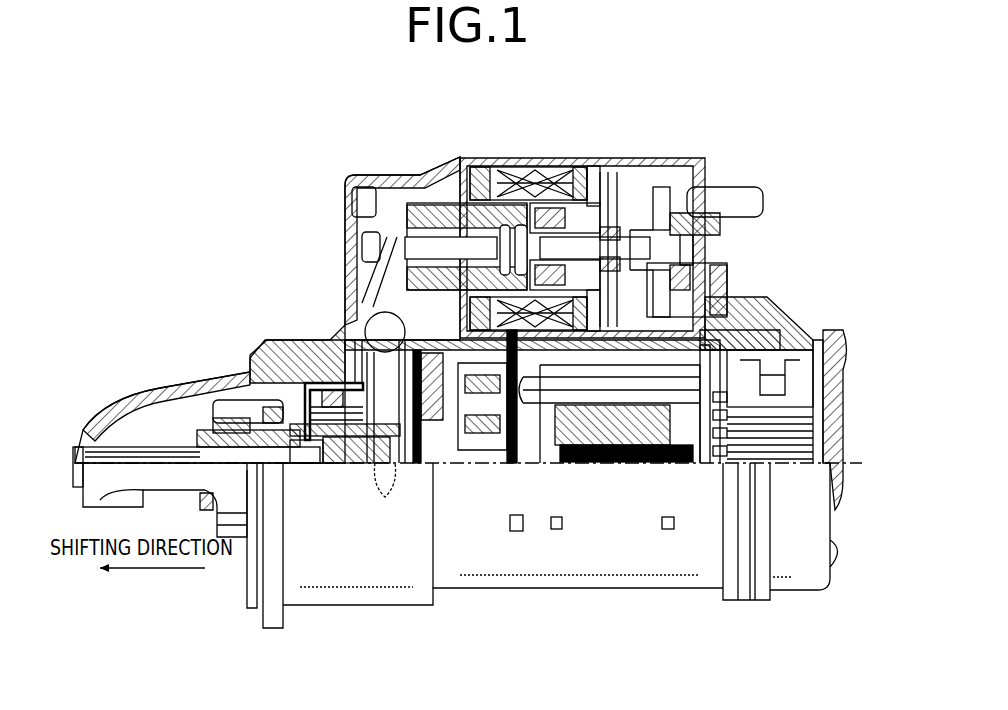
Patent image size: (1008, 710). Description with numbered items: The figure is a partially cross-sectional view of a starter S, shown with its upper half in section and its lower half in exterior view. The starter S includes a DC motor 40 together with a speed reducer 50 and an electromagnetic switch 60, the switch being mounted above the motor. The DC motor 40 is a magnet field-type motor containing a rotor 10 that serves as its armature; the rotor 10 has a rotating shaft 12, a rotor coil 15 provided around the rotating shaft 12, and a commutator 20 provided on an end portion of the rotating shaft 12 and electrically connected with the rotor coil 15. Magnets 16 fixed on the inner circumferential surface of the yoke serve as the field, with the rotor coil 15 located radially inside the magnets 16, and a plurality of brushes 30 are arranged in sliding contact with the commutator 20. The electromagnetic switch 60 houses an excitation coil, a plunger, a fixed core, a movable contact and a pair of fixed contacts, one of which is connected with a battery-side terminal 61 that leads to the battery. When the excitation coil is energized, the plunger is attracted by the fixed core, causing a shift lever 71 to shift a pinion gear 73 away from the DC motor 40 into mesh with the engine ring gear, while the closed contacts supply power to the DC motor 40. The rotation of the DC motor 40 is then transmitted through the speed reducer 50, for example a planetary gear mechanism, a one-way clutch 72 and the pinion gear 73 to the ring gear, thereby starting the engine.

The starter S is at (280, 193).
The rotor 10 is at (630, 470).
The rotating shaft 12 is at (608, 470).
The rotor coil 15 is at (597, 470).
The magnets 16 is at (550, 470).
The commutator 20 is at (818, 452).
The brushes 30 is at (768, 500).
The DC motor 40 is at (673, 553).
The speed reducer 50 is at (487, 466).
The electromagnetic switch 60 is at (553, 150).
The battery-side terminal 61 is at (738, 185).
The shift lever 71 is at (382, 282).
The one-way clutch 72 is at (288, 340).
The pinion gear 73 is at (232, 405).